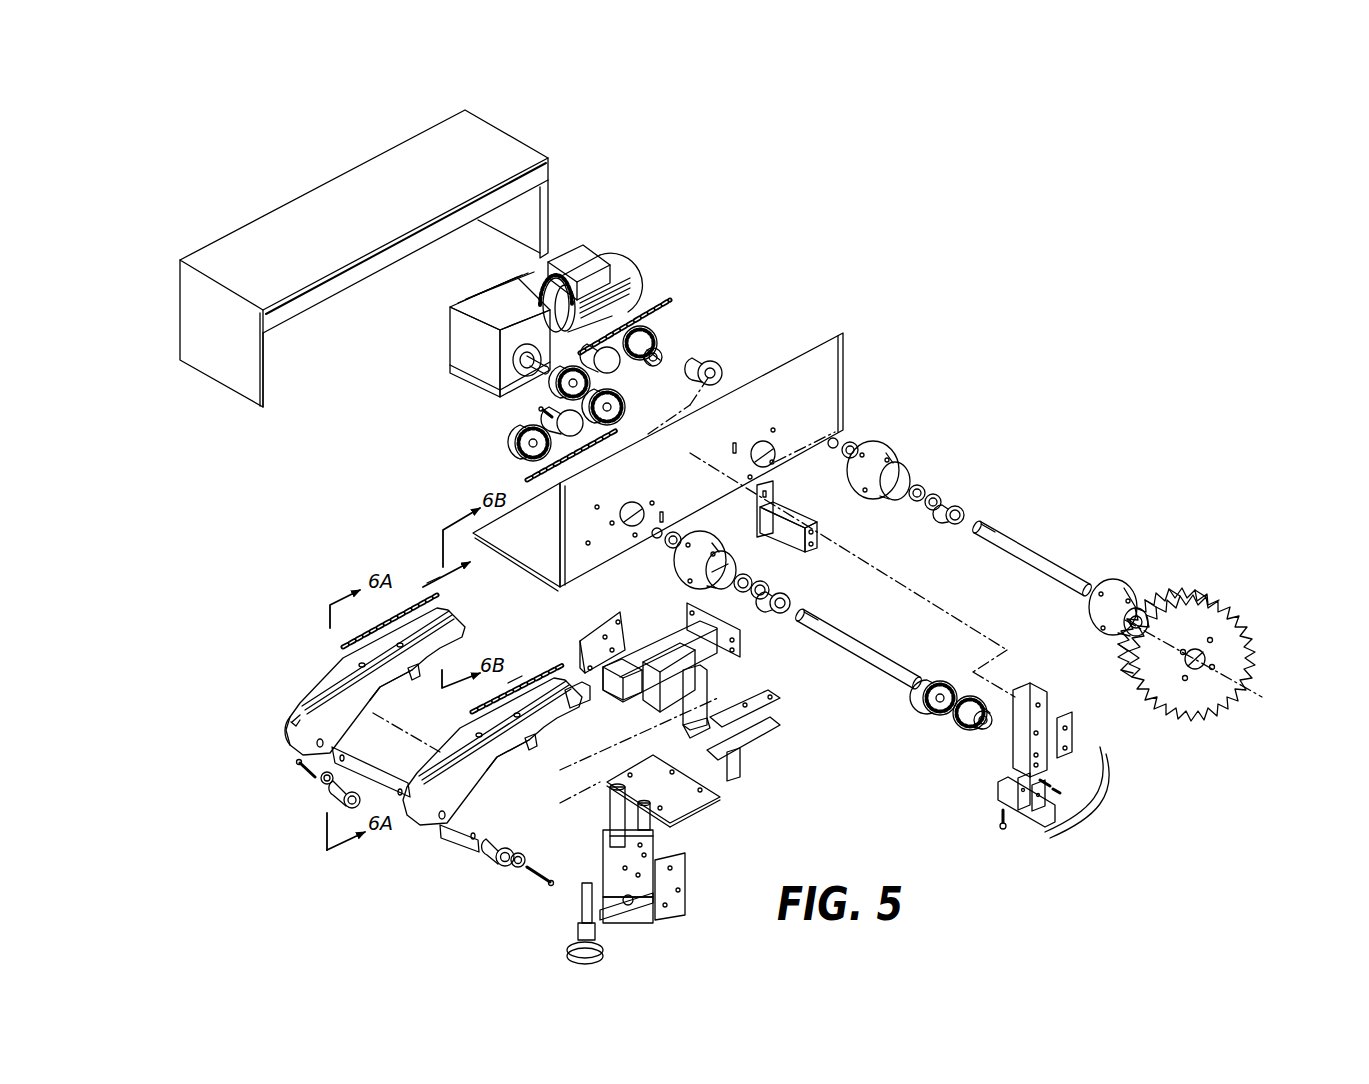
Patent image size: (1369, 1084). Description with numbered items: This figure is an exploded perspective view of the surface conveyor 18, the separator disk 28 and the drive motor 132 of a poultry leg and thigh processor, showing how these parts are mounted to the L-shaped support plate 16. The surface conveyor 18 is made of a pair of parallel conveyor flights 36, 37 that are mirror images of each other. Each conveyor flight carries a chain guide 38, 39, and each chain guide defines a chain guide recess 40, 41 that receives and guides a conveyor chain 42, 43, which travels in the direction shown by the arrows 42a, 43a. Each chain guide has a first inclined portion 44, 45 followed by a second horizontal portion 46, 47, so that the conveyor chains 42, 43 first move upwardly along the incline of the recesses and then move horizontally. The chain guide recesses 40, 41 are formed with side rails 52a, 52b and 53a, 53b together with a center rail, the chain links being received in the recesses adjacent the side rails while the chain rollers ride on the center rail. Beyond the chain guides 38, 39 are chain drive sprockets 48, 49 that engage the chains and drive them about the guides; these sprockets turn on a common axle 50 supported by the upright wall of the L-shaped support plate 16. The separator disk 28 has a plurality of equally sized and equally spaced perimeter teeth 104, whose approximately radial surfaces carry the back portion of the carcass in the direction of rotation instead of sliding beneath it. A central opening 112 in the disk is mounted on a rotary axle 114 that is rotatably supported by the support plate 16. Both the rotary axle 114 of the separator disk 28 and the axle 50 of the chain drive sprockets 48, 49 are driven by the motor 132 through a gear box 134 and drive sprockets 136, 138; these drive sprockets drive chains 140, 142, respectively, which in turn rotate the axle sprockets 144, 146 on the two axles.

The L-shaped support plate 16 is at (833, 358).
The surface conveyor 18 is at (376, 710).
The separator disk 28 is at (1215, 625).
The conveyor flight 36 is at (310, 688).
The conveyor flight 37 is at (427, 763).
The chain guide 38 is at (383, 682).
The chain guide 39 is at (503, 750).
The chain guide recess 40 is at (390, 643).
The chain guide recess 41 is at (467, 740).
The conveyor chain 42 is at (407, 607).
The arrow 42a is at (442, 578).
The conveyor chain 43 is at (522, 680).
The arrow 43a is at (515, 675).
The first inclined portion 44 is at (333, 677).
The first inclined portion 45 is at (450, 743).
The second horizontal portion 46 is at (460, 622).
The second horizontal portion 47 is at (587, 700).
The chain drive sprocket 48 is at (942, 677).
The chain drive sprocket 49 is at (962, 733).
The common axle 50 is at (862, 650).
The side rail 52a is at (307, 703).
The side rail 52b is at (290, 723).
The side rail 53a is at (410, 783).
The side rail 53b is at (437, 823).
The perimeter teeth 104 is at (1155, 613).
The central opening 112 is at (1212, 653).
The rotary axle 114 is at (1033, 555).
The motor 132 is at (622, 273).
The gear box 134 is at (463, 342).
The drive sprocket 136 is at (563, 393).
The drive sprocket 138 is at (600, 417).
The chain 140 is at (627, 320).
The chain 142 is at (558, 455).
The axle sprocket 144 is at (655, 357).
The axle sprocket 146 is at (523, 443).